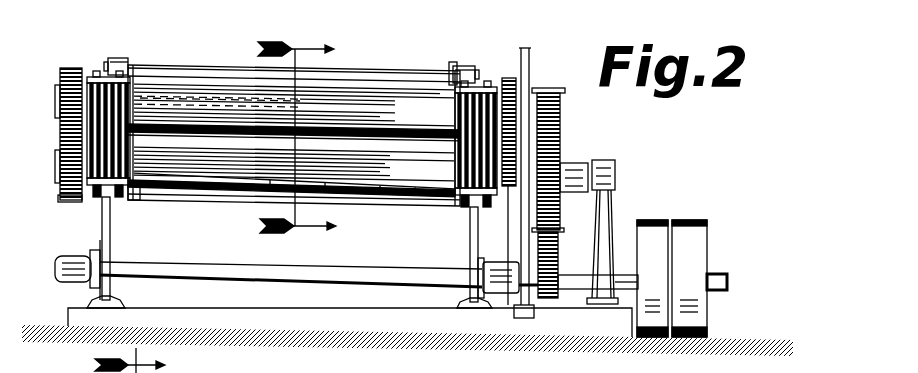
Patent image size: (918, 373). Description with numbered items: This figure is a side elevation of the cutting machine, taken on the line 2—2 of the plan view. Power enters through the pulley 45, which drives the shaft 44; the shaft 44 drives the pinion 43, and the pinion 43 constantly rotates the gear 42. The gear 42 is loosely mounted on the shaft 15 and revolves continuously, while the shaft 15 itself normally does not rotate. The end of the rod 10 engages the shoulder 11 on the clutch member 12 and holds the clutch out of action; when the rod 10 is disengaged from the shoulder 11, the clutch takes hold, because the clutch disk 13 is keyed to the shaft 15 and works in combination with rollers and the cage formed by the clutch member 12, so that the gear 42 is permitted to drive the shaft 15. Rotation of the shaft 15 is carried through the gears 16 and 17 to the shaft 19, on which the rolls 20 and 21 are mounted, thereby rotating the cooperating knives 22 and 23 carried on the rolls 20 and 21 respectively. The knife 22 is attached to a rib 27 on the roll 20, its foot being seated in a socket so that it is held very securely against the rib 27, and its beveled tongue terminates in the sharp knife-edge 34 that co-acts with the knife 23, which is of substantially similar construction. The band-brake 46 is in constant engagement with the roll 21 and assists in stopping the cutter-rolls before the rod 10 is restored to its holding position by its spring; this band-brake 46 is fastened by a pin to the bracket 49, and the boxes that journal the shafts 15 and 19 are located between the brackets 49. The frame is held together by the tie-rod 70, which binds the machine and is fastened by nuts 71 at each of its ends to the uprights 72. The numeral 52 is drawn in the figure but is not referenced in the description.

The line 2— 2 is at (140, 360).
The rod 10 is at (523, 215).
The shoulder 11 is at (511, 78).
The clutch member 12 is at (535, 93).
The clutch disk 13 is at (316, 141).
The shaft 15 is at (56, 163).
The gear 16 is at (72, 203).
The gear 17 is at (88, 34).
The shaft 19 is at (57, 102).
The roll 20 is at (294, 168).
The roll 21 is at (294, 105).
The knife 22 is at (200, 195).
The knife 23 is at (187, 108).
The rib 27 is at (132, 196).
The knife-edge 34 is at (395, 196).
The gear 42 is at (548, 90).
The pinion 43 is at (551, 298).
The shaft 44 is at (328, 243).
The pulley 45 is at (702, 190).
The band-brake 46 is at (480, 72).
The bracket 49 is at (112, 198).
The part of adjacent figure 52 is at (183, 367).
The tie-rod 70 is at (388, 70).
The nuts 71 is at (109, 60).
The uprights 72 is at (119, 59).